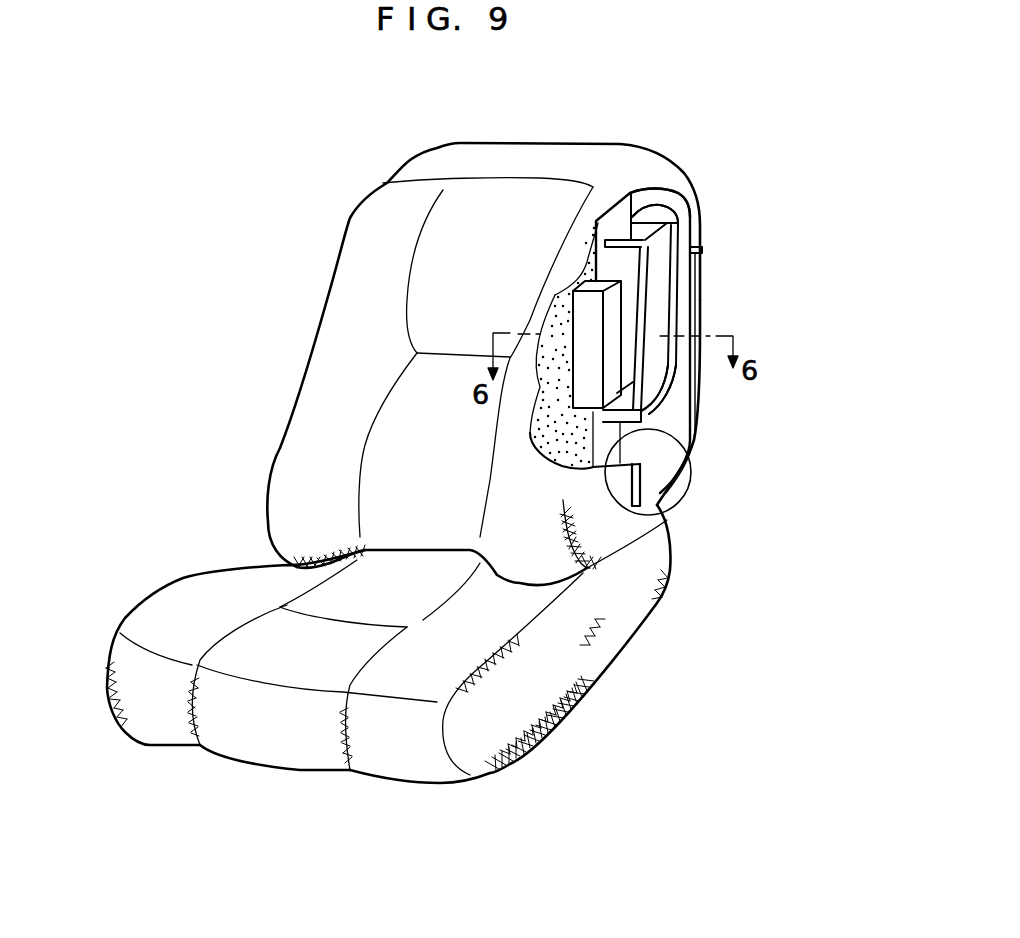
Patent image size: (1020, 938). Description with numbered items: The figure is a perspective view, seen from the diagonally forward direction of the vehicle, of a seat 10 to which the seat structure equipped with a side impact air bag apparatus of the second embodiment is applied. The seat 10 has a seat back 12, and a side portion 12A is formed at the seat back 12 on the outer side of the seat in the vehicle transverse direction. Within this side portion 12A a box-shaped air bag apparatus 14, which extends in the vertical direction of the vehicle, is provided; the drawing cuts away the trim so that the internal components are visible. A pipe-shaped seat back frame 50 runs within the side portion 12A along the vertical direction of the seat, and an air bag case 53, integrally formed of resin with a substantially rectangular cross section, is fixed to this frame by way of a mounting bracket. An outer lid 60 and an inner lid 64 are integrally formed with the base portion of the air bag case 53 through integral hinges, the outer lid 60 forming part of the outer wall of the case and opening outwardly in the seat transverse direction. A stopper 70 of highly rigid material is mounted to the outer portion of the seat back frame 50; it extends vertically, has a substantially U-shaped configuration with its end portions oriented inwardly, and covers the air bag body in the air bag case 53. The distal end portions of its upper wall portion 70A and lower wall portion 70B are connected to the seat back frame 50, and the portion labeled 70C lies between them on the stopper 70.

The seat 10 is at (262, 348).
The seat back 12 is at (545, 150).
The side portion 12A is at (700, 193).
The air bag apparatus 14 is at (637, 313).
The seat back frame 50 is at (648, 442).
The air bag case 53 is at (478, 217).
The outer lid 60 is at (605, 246).
The inner lid 64 is at (587, 327).
The stopper 70 is at (662, 272).
The upper wall portion 70A is at (644, 235).
The lower wall portion 70B is at (645, 490).
The bent portion of support rod 70C is at (662, 366).